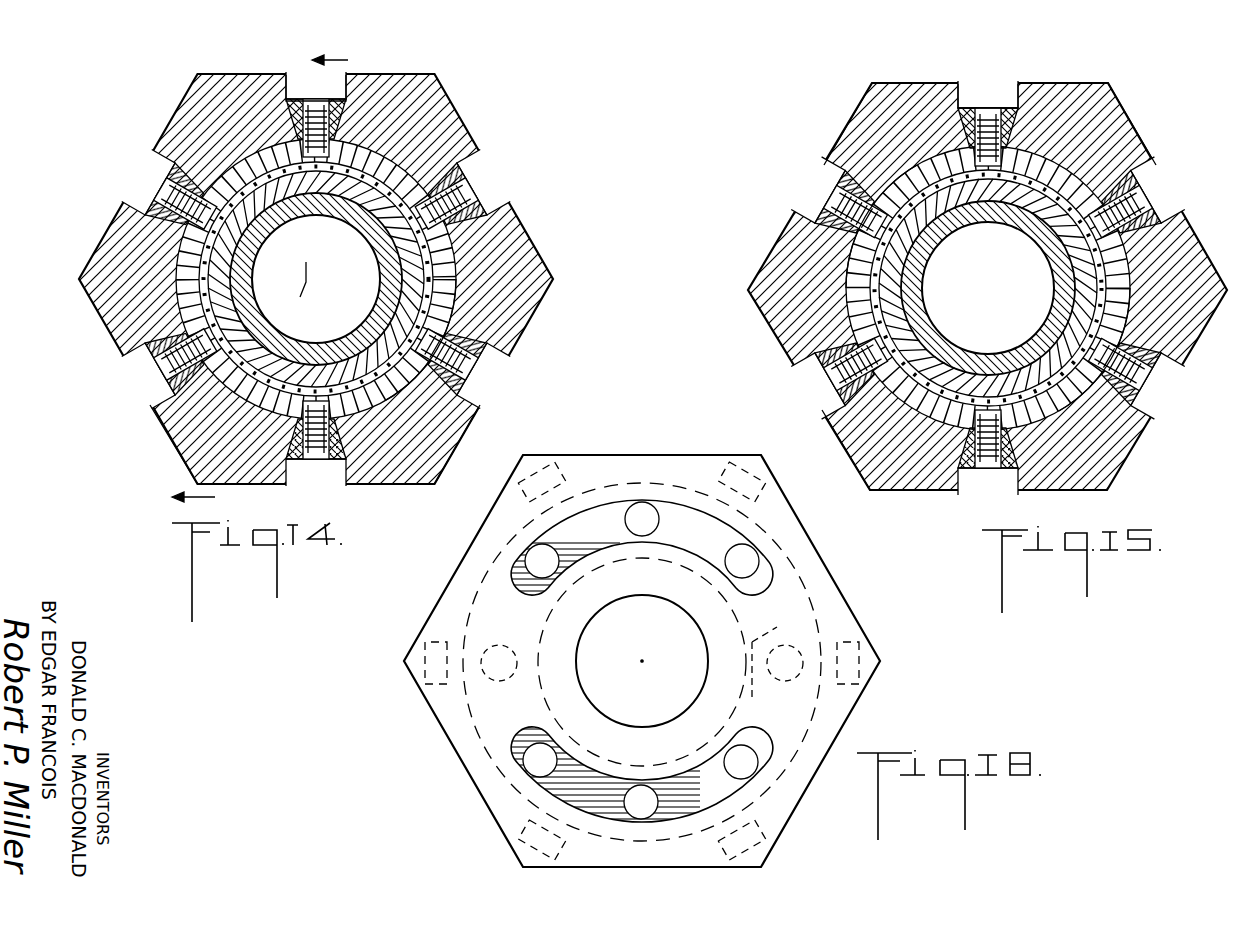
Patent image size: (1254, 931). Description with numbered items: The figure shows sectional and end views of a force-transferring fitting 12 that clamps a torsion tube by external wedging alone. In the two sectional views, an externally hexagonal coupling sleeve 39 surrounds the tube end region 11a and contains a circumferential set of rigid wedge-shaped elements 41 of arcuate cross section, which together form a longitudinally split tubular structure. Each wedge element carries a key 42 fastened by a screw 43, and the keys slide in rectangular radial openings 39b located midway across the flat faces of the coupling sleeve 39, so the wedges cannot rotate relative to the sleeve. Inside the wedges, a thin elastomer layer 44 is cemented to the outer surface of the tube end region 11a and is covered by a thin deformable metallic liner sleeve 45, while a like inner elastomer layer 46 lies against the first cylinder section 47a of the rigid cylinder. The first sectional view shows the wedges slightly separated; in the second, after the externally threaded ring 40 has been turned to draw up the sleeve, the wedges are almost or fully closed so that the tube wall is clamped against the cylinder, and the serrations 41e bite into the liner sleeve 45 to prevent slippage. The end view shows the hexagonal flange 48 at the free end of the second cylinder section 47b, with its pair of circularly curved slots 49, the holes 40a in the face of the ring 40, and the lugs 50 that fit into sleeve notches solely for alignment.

In FIG. 14, the tube end region 11a is at (273, 196).
In FIG. 15, the tube end region 11a is at (1063, 247).
In FIG. 14, the force-transferring fitting 12 is at (276, 279).
In FIG. 14, the coupling sleeve 39 is at (88, 266).
In FIG. 15, the coupling sleeve 39 is at (1130, 433).
In FIG. 14, the rectangular radial openings 39b is at (134, 364).
In FIG. 15, the rectangular radial openings 39b is at (828, 167).
In FIG. 16, the externally threaded ring 40 is at (815, 712).
In FIG. 16, the holes 40a is at (645, 530).
In FIG. 14, the wedge-shaped elements 41 is at (462, 270).
In FIG. 15, the wedge-shaped elements 41 is at (840, 262).
In FIG. 14, the serrations 41e is at (413, 300).
In FIG. 15, the serrations 41e is at (1040, 158).
In FIG. 14, the key 42 is at (342, 112).
In FIG. 15, the key 42 is at (960, 130).
In FIG. 14, the screw 43 is at (300, 102).
In FIG. 15, the screw 43 is at (1160, 205).
In FIG. 14, the elastomer layer 44 is at (362, 158).
In FIG. 15, the elastomer layer 44 is at (925, 172).
In FIG. 14, the liner sleeve 45 is at (398, 177).
In FIG. 15, the liner sleeve 45 is at (900, 257).
In FIG. 14, the inner elastomer layer 46 is at (257, 337).
In FIG. 15, the inner elastomer layer 46 is at (957, 348).
In FIG. 14, the first cylinder section 47a is at (362, 228).
In FIG. 15, the first cylinder section 47a is at (922, 316).
In FIG. 16, the second cylinder section 47b is at (763, 640).
In FIG. 16, the flange 48 is at (845, 617).
In FIG. 16, the circularly curved slots 49 is at (687, 503).
In FIG. 16, the lugs 50 is at (740, 478).